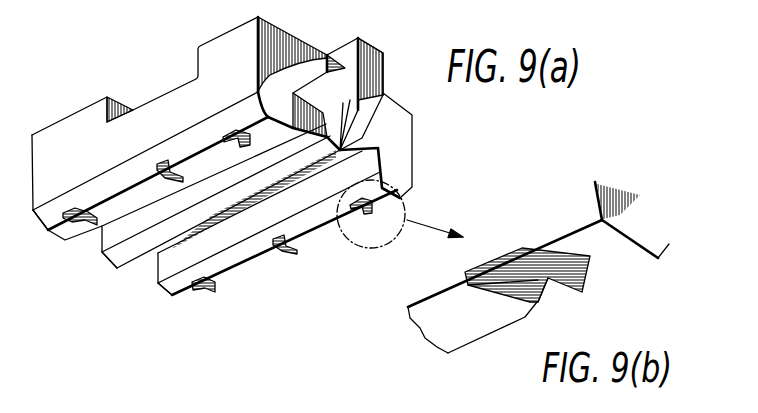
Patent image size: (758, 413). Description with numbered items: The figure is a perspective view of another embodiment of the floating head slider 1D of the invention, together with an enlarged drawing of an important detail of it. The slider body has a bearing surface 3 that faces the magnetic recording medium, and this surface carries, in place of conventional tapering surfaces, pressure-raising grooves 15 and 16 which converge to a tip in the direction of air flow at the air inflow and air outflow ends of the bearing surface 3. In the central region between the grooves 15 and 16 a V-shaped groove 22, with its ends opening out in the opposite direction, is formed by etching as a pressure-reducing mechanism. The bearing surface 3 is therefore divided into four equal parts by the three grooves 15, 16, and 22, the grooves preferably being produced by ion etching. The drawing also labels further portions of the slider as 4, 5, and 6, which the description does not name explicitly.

In FIG. 9A, the floating head slider 1D is at (66, 117).
In FIG. 9A, the bearing surface 3 is at (62, 232).
In FIG. 9A, the block portion 4 is at (300, 58).
In FIG. 9A, the projection 5 is at (370, 67).
In FIG. 9A, the end wall 6 is at (378, 149).
In FIG. 9A, the pressure-raising groove 15 is at (92, 213).
In FIG. 9A, the pressure-raising groove 16 is at (236, 130).
In FIG. 9B, the pressure-raising groove 16 is at (560, 278).
In FIG. 9A, the V-shaped groove 22 is at (166, 162).